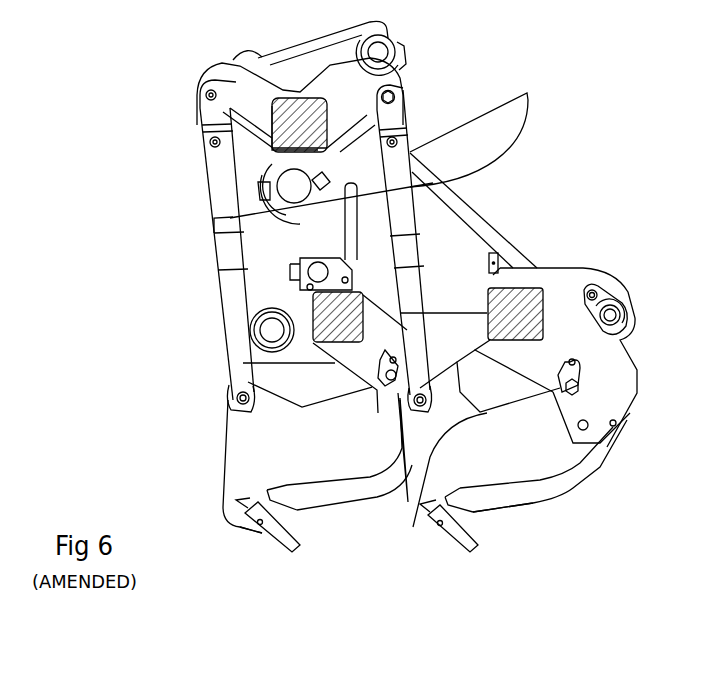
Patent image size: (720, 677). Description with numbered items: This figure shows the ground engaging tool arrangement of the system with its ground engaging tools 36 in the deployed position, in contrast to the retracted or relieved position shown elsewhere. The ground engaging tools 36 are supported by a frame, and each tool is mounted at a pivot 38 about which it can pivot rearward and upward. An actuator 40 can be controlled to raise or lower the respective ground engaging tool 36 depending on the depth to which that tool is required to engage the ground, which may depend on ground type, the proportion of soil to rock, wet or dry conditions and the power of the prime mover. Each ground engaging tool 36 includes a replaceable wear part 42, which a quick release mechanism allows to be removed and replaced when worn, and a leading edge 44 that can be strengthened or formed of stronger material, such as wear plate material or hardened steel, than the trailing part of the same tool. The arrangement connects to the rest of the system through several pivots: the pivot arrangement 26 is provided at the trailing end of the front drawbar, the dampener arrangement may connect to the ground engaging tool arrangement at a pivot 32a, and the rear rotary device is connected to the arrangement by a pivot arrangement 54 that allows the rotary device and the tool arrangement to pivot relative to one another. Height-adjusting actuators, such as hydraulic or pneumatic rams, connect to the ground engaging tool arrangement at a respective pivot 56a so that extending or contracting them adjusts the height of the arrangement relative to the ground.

The pivot arrangement 26 is at (610, 325).
The pivot 32a is at (396, 57).
The ground engaging tool 36 is at (377, 500).
The pivot 38 is at (403, 408).
The actuator 40 is at (391, 142).
The replaceable wear part 42 is at (297, 548).
The leading edge 44 is at (307, 467).
The pivot arrangement 54 is at (250, 327).
The pivot 56a is at (233, 60).